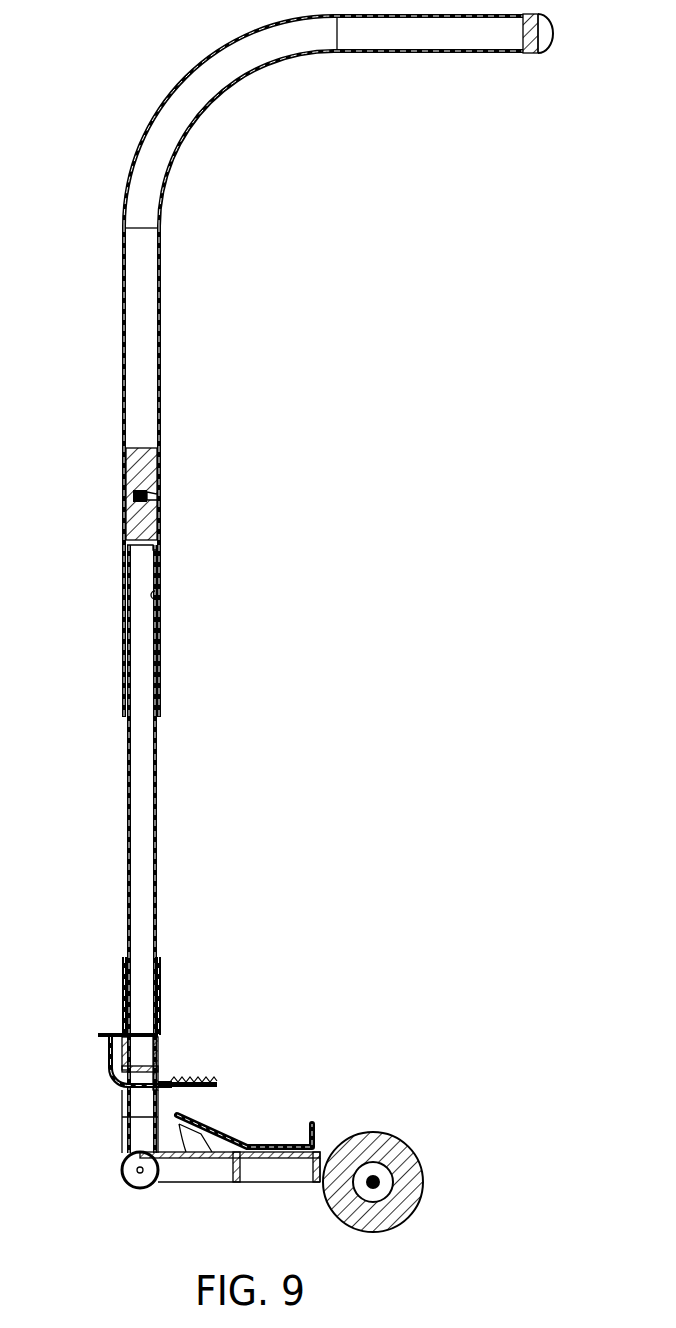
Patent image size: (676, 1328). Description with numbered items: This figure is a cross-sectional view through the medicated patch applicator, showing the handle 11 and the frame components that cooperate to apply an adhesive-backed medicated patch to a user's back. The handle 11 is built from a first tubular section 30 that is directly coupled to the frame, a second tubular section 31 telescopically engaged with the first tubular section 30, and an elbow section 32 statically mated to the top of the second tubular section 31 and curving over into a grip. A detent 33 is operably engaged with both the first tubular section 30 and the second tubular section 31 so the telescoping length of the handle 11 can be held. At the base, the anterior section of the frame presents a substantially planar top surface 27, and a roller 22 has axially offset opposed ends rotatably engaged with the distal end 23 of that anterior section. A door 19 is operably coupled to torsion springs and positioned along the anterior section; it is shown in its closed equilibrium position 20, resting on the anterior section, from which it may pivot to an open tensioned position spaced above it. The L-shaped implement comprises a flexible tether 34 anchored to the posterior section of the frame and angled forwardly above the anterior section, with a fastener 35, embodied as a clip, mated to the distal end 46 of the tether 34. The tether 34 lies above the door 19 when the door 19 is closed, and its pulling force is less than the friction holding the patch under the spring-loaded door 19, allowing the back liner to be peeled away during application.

The handle 11 is at (128, 87).
The elbow section 32 is at (270, 65).
The second tubular section 31 is at (162, 335).
The detent 33 is at (148, 497).
The first tubular section 30 is at (157, 820).
The flexible tether 34 is at (108, 1068).
The distal end of the tether 46 is at (162, 1082).
The fastener 35 is at (208, 1078).
The closed equilibrium position 20 is at (303, 1112).
The door 19 is at (254, 1138).
The distal end of the anterior section 23 is at (323, 1156).
The roller 22 is at (382, 1145).
The planar top surface 27 is at (262, 1158).